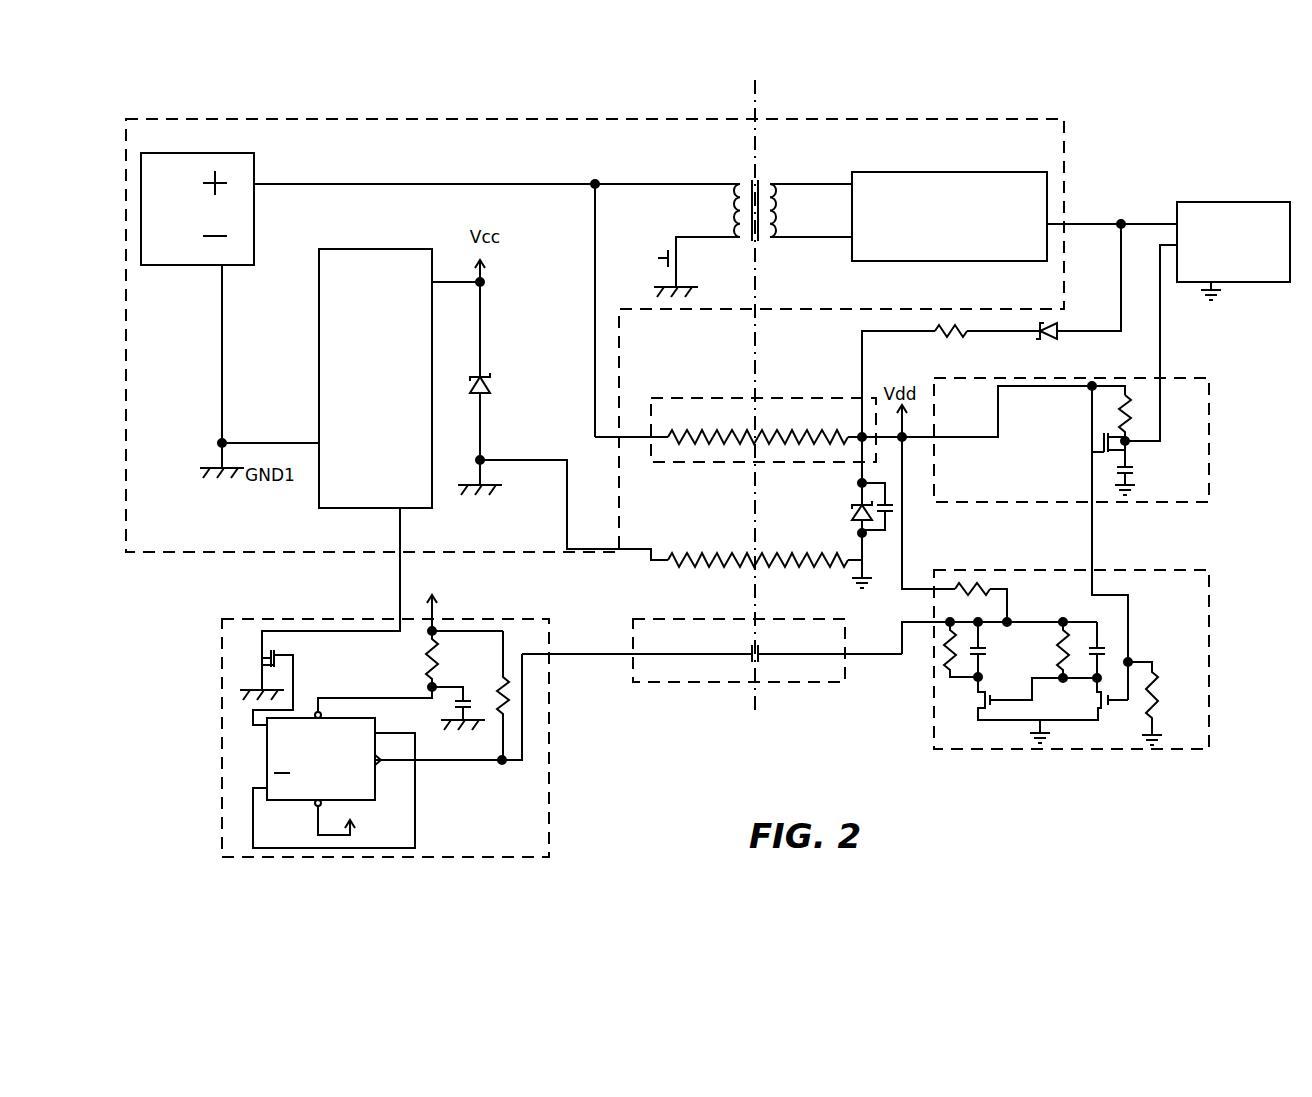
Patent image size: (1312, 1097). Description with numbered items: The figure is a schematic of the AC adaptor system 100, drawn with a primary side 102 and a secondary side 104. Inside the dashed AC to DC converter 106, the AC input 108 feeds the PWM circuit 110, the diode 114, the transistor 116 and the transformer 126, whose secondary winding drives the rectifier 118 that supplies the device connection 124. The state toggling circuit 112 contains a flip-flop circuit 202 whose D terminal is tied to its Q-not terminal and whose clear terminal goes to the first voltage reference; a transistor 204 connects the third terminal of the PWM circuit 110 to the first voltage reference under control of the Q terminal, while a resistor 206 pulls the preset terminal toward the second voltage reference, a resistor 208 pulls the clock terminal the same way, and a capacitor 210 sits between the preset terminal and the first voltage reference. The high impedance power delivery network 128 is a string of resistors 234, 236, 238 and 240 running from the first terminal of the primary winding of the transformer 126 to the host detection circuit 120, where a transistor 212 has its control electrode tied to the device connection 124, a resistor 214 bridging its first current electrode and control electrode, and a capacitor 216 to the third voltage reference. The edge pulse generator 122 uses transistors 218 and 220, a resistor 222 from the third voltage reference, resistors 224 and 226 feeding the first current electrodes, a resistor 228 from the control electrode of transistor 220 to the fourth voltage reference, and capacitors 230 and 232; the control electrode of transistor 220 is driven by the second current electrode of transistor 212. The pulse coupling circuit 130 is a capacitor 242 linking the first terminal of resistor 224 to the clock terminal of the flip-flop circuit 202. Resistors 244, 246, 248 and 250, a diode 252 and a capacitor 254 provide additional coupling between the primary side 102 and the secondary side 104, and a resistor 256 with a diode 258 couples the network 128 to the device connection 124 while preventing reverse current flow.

The AC adaptor system 100 is at (1143, 178).
The primary side 102 is at (572, 100).
The secondary side 104 is at (958, 100).
The AC to DC converter 106 is at (363, 119).
The AC input 108 is at (205, 152).
The PWM circuit 110 is at (397, 249).
The state toggling circuit 112 is at (549, 818).
The diode 114 is at (483, 375).
The transistor 116 is at (656, 250).
The rectifier 118 is at (993, 172).
The host detection circuit 120 is at (1030, 378).
The edge pulse generator 122 is at (1030, 570).
The device connection 124 is at (1268, 202).
The transformer 126 is at (725, 184).
The high impedance power delivery network 128 is at (730, 398).
The pulse coupling circuit 130 is at (740, 619).
The flip-flop circuit 202 is at (289, 800).
The transistor 204 is at (272, 650).
The resistor 206 is at (432, 660).
The resistor 208 is at (505, 693).
The capacitor 210 is at (470, 703).
The transistor 212 is at (1093, 452).
The resistor 214 is at (1125, 407).
The capacitor 216 is at (1130, 475).
The transistor 218 is at (980, 692).
The transistor 220 is at (1100, 707).
The resistor 222 is at (965, 588).
The resistor 224 is at (950, 662).
The resistor 226 is at (1090, 623).
The resistor 228 is at (1152, 707).
The capacitor 230 is at (980, 655).
The capacitor 232 is at (1100, 648).
The resistor 234 is at (670, 440).
The resistor 236 is at (732, 440).
The resistor 238 is at (782, 437).
The resistor 240 is at (830, 437).
The capacitor 242 is at (750, 660).
The resistor 244 is at (673, 560).
The resistor 246 is at (727, 560).
The resistor 248 is at (790, 560).
The resistor 250 is at (837, 557).
The diode 252 is at (855, 508).
The capacitor 254 is at (885, 512).
The resistor 256 is at (940, 330).
The diode 258 is at (1037, 325).